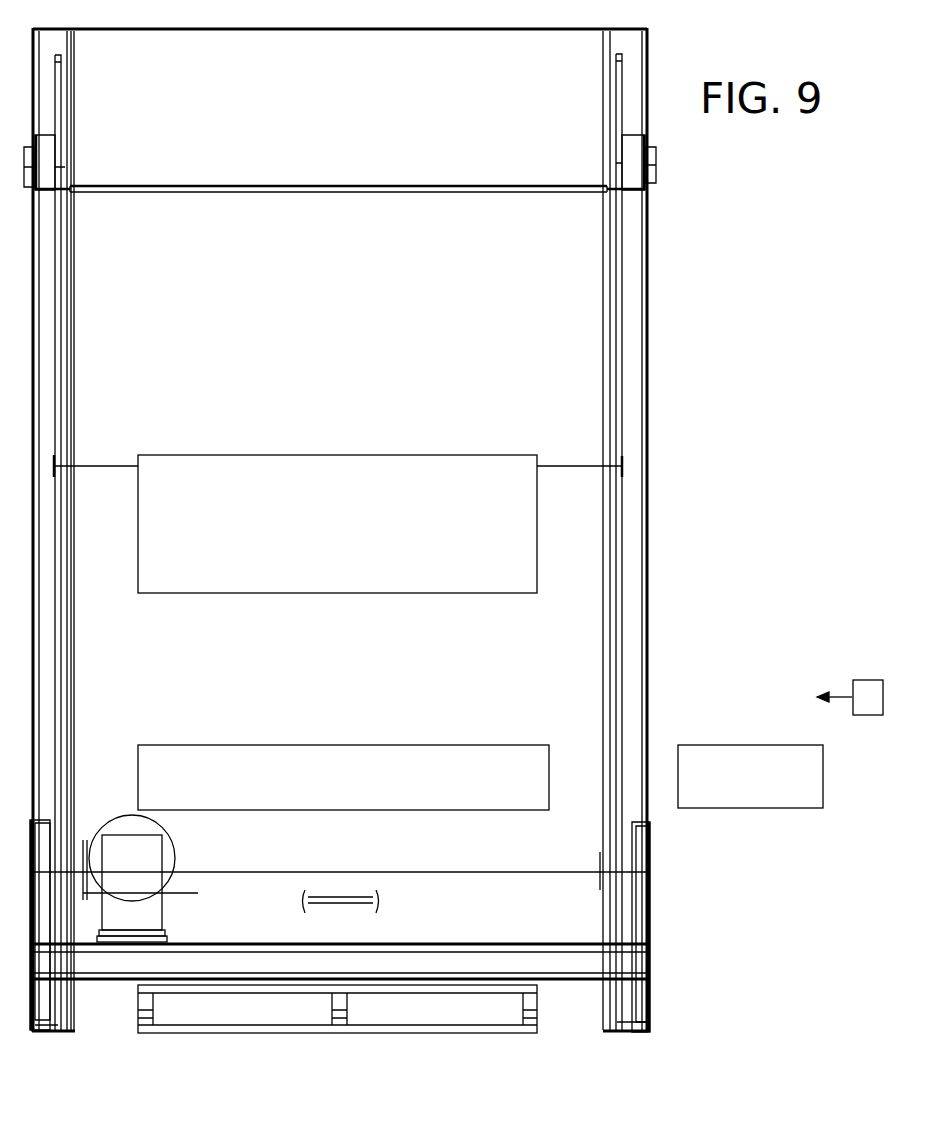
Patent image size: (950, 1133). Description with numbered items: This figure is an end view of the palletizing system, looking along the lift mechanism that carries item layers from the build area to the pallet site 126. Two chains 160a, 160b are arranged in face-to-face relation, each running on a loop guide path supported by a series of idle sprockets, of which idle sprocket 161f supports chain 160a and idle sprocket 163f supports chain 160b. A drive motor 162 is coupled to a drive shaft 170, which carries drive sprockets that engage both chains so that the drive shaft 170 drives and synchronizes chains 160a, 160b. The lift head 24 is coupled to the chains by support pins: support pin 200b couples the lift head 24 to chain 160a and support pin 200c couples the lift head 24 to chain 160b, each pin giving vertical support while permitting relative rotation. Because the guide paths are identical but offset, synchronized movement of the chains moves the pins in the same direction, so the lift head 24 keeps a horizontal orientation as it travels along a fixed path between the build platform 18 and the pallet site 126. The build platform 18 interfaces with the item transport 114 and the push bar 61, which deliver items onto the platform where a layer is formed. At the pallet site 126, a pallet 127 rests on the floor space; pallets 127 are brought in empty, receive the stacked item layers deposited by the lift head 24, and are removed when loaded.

The pallet site 126 is at (100, 1012).
The chain 160a is at (55, 320).
The chain 160b is at (615, 315).
The idle sprocket 161f is at (60, 112).
The idle sprocket 163f is at (615, 112).
The support pin 200b is at (106, 465).
The support pin 200c is at (570, 465).
The lift head 24 is at (355, 545).
The build platform 18 is at (355, 789).
The drive motor 162 is at (153, 910).
The drive shaft 170 is at (333, 905).
The pallet 127 is at (190, 1035).
The item transport 114 is at (732, 753).
The push bar 61 is at (863, 680).